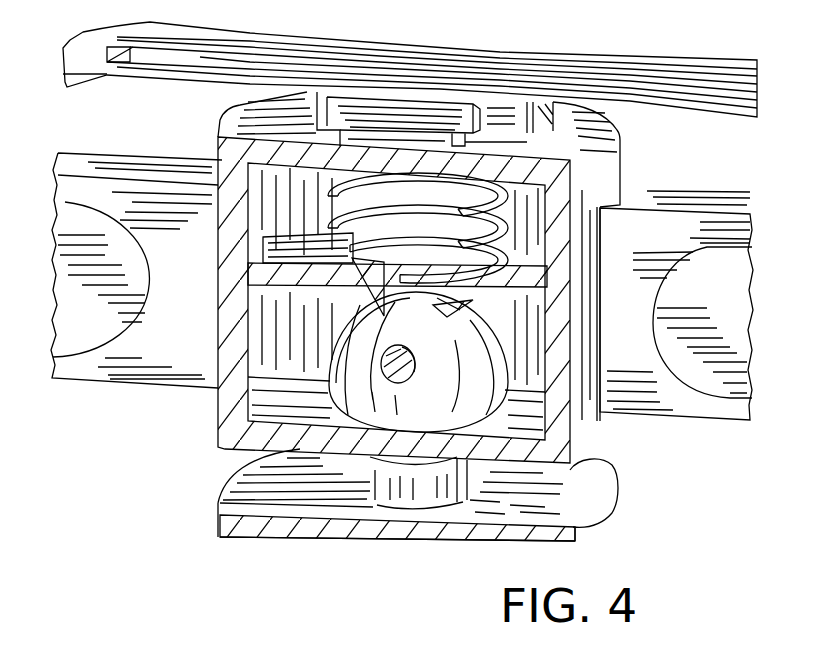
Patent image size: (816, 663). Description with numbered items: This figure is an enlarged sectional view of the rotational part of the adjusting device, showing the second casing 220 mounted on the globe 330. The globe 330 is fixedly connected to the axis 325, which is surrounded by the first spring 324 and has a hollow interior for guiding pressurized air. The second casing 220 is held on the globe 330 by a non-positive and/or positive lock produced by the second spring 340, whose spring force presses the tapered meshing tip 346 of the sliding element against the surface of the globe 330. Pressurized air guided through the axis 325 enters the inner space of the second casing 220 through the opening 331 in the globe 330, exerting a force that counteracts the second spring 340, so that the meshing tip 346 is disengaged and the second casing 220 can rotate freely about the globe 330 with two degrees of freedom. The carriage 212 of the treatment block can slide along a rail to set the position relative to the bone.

The carriage 212 is at (613, 137).
The second casing 220 is at (598, 495).
The first spring 324 is at (220, 336).
The axis 325 is at (580, 528).
The globe 330 is at (340, 390).
The opening 331 is at (417, 365).
The second spring 340 is at (492, 250).
The meshing tip 346 is at (437, 300).